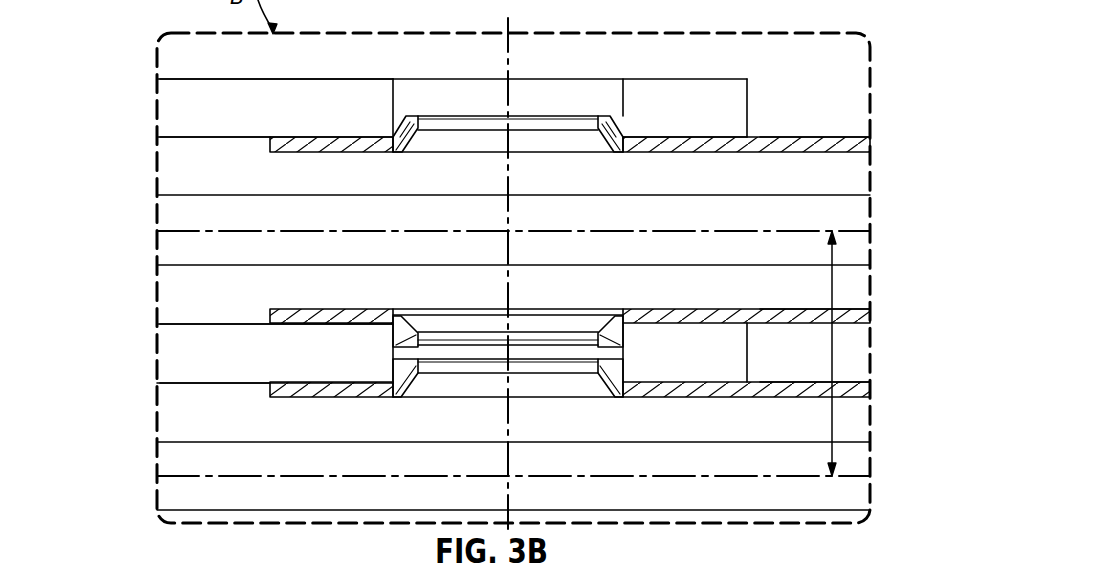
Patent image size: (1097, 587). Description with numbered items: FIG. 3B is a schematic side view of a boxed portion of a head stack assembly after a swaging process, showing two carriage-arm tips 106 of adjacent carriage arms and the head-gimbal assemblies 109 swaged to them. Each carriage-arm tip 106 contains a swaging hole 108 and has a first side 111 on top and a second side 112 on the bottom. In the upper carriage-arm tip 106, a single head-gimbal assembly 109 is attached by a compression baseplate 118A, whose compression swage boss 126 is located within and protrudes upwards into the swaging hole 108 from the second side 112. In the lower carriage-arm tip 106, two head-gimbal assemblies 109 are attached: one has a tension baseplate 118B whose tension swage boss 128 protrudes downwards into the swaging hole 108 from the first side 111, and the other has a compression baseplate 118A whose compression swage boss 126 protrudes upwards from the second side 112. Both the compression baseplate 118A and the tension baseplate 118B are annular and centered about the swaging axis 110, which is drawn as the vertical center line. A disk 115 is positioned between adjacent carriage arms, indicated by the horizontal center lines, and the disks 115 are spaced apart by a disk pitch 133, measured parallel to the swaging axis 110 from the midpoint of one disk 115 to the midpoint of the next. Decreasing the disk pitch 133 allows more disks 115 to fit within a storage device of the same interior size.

The carriage-arm tip 106 is at (182, 100).
The swaging hole 108 is at (578, 100).
The head-gimbal assembly 109 is at (862, 143).
The swaging axis 110 is at (510, 61).
The first side 111 is at (195, 79).
The second side 112 is at (200, 137).
The disk 115 is at (843, 223).
The compression baseplate 118A is at (765, 148).
The tension baseplate 118B is at (745, 317).
The compression swage boss 126 is at (613, 124).
The tension swage boss 128 is at (623, 332).
The disk pitch 133 is at (832, 282).